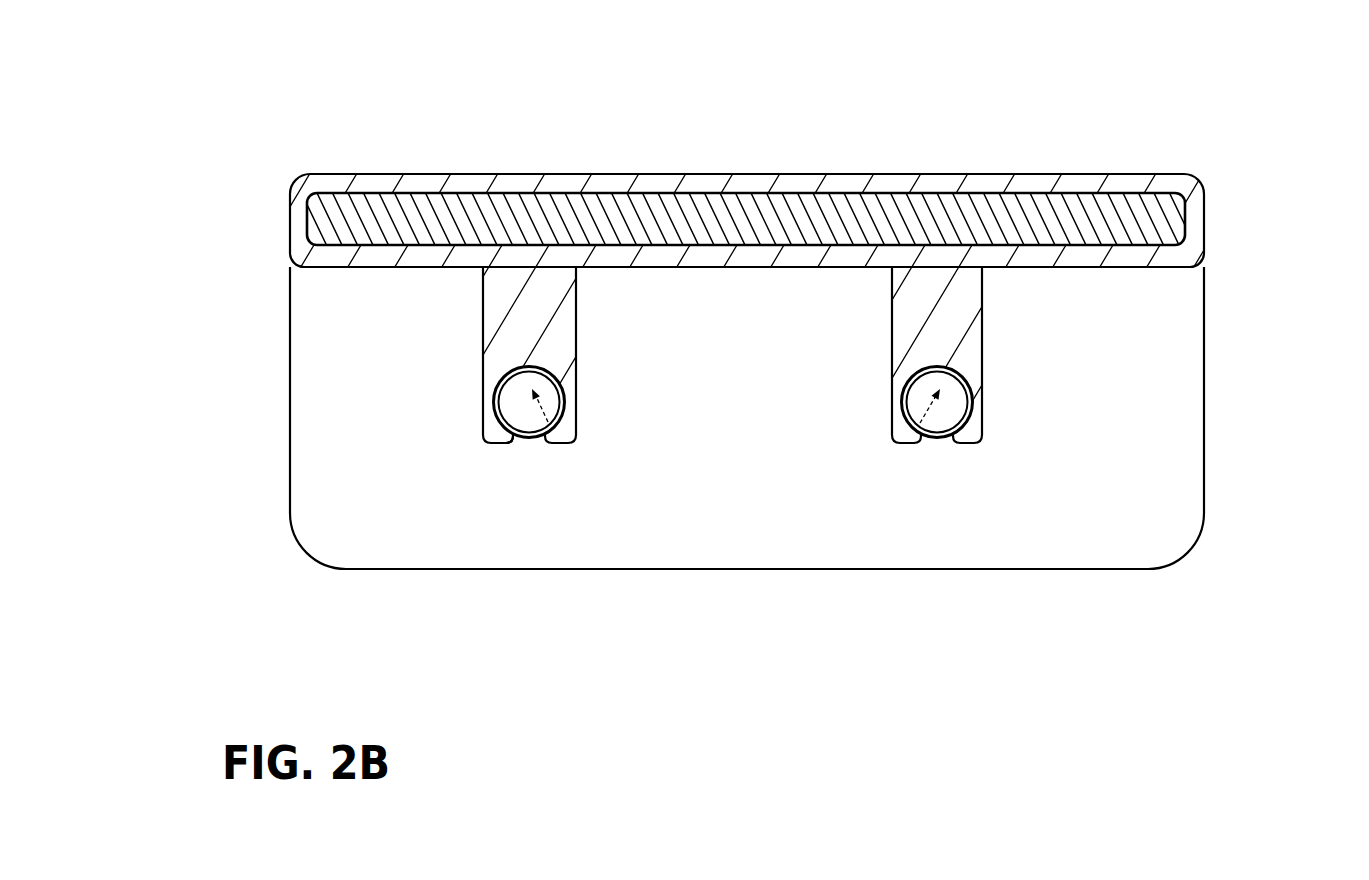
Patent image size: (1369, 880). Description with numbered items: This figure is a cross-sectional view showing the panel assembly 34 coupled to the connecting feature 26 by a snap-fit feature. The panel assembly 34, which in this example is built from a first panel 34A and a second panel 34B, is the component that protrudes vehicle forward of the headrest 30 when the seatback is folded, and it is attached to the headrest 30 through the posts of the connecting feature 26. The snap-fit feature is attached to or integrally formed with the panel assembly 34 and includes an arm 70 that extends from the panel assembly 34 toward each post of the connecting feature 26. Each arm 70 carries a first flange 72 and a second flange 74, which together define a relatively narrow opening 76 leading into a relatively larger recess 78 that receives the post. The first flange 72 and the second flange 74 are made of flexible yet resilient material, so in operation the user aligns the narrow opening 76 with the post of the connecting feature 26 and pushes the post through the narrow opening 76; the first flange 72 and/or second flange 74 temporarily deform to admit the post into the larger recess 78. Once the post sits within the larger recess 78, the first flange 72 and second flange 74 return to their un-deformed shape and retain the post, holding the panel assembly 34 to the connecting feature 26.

The connecting feature 26 is at (513, 437).
The headrest 30 is at (1168, 396).
The panel assembly 34 is at (733, 265).
The first panel 34A is at (883, 185).
The second panel 34B is at (995, 225).
The arm 70 is at (687, 455).
The first flange 72 is at (483, 395).
The second flange 74 is at (576, 420).
The narrow opening 76 is at (522, 452).
The larger recess 78 is at (549, 435).